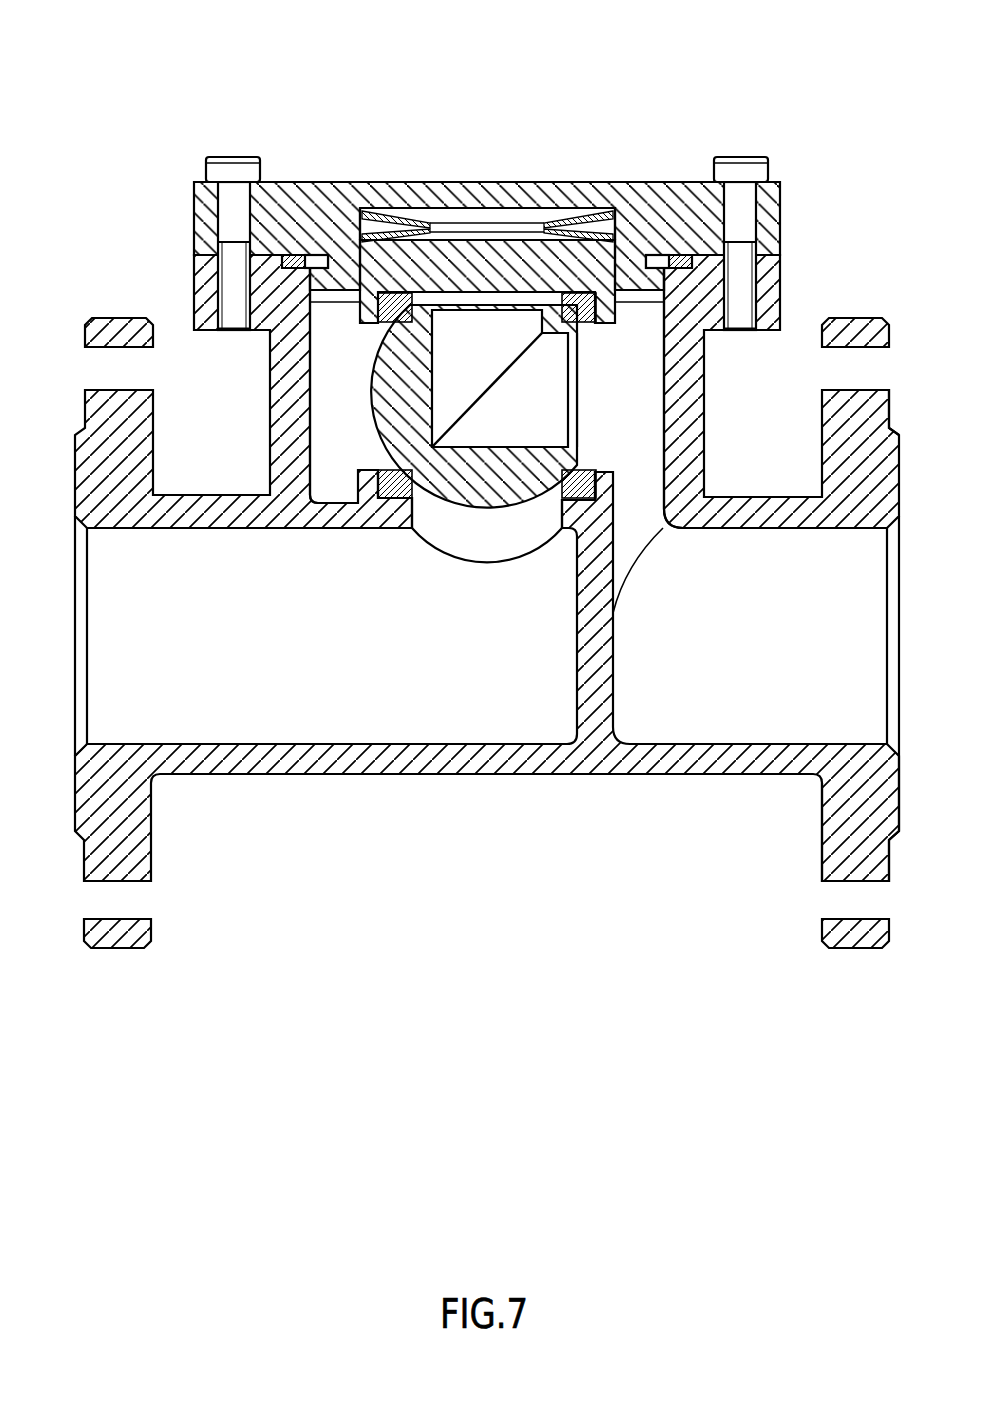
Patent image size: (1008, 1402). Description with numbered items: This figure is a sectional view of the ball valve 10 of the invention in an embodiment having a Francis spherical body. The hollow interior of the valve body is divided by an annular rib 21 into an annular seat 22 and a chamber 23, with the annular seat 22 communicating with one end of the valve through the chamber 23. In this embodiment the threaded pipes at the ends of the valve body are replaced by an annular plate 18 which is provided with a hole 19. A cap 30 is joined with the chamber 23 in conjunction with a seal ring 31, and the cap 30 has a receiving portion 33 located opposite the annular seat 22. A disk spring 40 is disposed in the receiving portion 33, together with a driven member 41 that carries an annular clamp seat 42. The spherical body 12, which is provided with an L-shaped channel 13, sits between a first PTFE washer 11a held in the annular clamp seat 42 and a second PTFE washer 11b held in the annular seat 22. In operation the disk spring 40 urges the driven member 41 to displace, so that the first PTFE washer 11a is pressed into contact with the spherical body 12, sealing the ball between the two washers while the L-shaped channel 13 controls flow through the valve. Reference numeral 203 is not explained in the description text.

The ball valve 10 is at (487, 480).
The first PTFE washer 11a is at (385, 310).
The second PTFE washer 11b is at (383, 497).
The spherical body 12 is at (492, 477).
The L-shaped channel 13 is at (540, 402).
The annular plate 18 is at (855, 820).
The hole 19 is at (857, 905).
The annular rib 21 is at (600, 537).
The annular seat 22 is at (445, 513).
The chamber 23 is at (345, 440).
The cap 30 is at (635, 203).
The seal ring 31 is at (690, 264).
The receiving portion 33 is at (475, 212).
The disk spring 40 is at (397, 218).
The driven member 41 is at (360, 253).
The annular clamp seat 42 is at (380, 294).
The bottom wall of body 203 is at (240, 760).